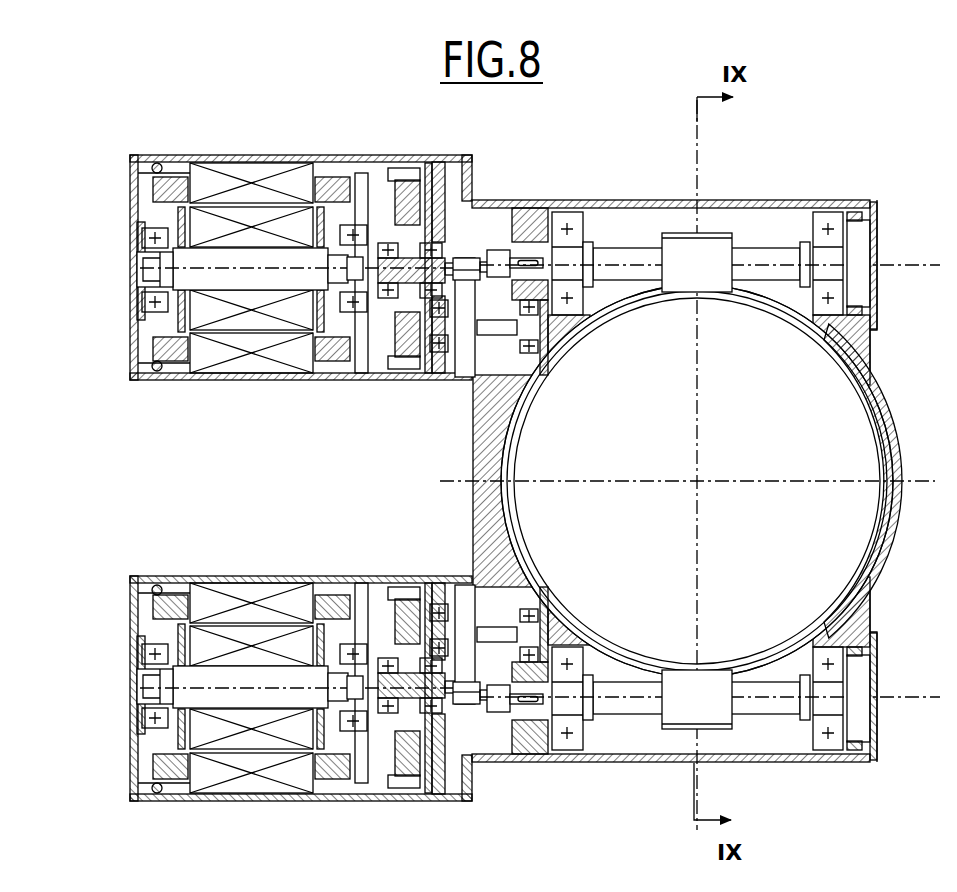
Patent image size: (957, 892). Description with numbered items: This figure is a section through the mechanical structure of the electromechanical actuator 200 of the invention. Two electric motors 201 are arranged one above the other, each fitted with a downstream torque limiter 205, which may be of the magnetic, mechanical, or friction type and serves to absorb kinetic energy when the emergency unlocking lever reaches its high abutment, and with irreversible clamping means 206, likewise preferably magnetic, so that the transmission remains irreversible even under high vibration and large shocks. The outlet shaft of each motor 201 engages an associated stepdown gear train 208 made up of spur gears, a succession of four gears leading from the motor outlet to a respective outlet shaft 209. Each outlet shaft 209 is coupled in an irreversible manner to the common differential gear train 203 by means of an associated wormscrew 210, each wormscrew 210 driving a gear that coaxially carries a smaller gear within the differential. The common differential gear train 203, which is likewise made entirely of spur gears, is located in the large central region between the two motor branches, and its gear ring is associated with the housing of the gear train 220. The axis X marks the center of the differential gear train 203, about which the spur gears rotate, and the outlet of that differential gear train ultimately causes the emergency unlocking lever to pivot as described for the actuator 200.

The electromechanical actuator 200 is at (298, 126).
The electric motor 201 is at (197, 155).
The common differential gear train 203 is at (841, 434).
The torque limiter 205 is at (397, 512).
The irreversible clamping means 206 is at (410, 343).
The stepdown gear train 208 is at (468, 250).
The outlet shaft 209 is at (625, 247).
The wormscrew 210 is at (713, 235).
The housing of the gear train 220 is at (830, 202).
The axis of rotation X is at (695, 481).